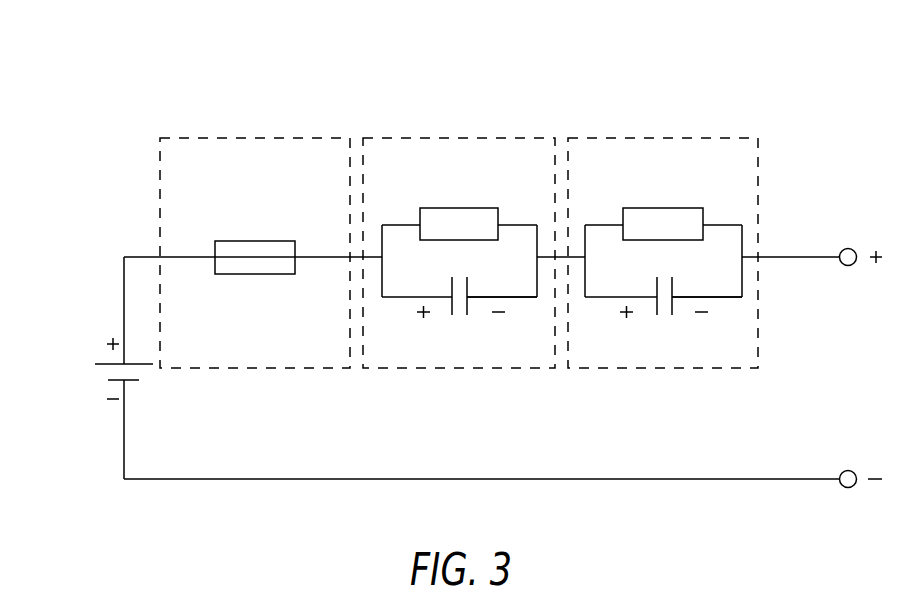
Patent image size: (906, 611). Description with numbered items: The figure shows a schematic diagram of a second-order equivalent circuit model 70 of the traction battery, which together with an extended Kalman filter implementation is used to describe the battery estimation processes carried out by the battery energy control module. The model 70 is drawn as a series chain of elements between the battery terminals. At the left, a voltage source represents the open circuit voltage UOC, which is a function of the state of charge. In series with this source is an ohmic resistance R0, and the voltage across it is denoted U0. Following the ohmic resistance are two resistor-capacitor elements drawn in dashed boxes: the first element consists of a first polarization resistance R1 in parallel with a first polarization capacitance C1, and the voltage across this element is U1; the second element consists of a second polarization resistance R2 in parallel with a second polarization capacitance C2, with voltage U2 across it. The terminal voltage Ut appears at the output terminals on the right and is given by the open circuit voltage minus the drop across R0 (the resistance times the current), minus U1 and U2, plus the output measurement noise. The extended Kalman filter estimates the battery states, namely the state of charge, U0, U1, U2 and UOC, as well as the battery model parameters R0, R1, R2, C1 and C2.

The second-order equivalent circuit model 70 is at (740, 85).
The ohmic resistance R0 is at (255, 235).
The battery state voltage U0 is at (255, 290).
The first polarization resistance R1 is at (459, 201).
The first polarization capacitance C1 is at (461, 319).
The first RC voltage U1 is at (502, 275).
The second polarization resistance R2 is at (663, 201).
The second polarization capacitance C2 is at (664, 319).
The second RC voltage U2 is at (707, 275).
The open circuit voltage UOC is at (95, 368).
The terminal voltage Ut is at (858, 368).